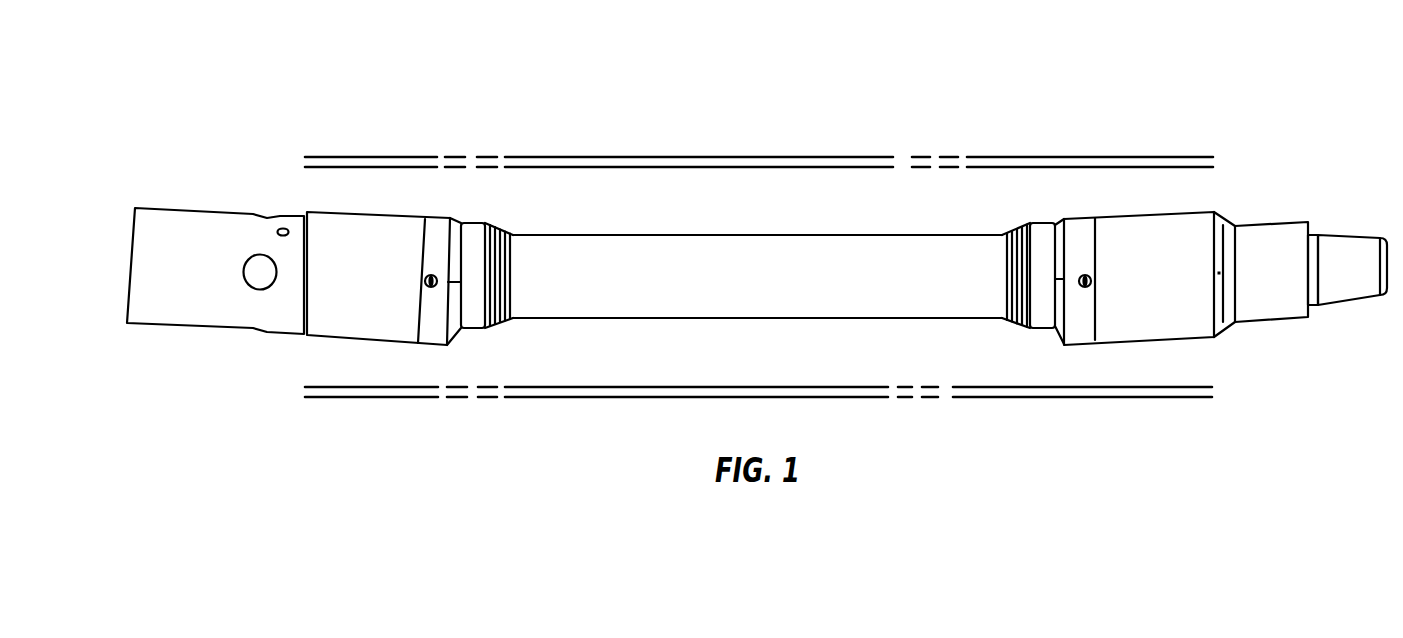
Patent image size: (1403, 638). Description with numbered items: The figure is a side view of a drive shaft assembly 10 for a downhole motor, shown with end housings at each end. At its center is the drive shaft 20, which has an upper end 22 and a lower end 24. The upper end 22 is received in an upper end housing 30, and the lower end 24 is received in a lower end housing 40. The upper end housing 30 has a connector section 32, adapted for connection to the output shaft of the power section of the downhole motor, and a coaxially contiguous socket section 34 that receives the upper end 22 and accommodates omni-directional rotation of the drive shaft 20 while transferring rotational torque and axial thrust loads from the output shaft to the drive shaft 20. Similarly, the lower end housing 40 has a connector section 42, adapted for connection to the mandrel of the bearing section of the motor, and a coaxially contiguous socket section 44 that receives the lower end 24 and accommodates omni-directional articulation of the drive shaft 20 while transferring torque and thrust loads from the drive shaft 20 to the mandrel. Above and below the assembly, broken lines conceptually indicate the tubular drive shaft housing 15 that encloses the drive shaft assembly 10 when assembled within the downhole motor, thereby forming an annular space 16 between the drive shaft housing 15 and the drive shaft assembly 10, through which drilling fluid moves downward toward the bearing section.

The drive shaft assembly 10 is at (198, 75).
The drive shaft housing 15 is at (655, 157).
The annular space 16 is at (978, 197).
The drive shaft 20 is at (758, 235).
The upper end 22 is at (1000, 333).
The lower end 24 is at (517, 330).
The upper end housing 30 is at (1204, 348).
The connector section 32 is at (1340, 232).
The socket section 34 is at (1142, 343).
The lower end housing 40 is at (298, 355).
The connector section 42 is at (172, 207).
The socket section 44 is at (378, 340).